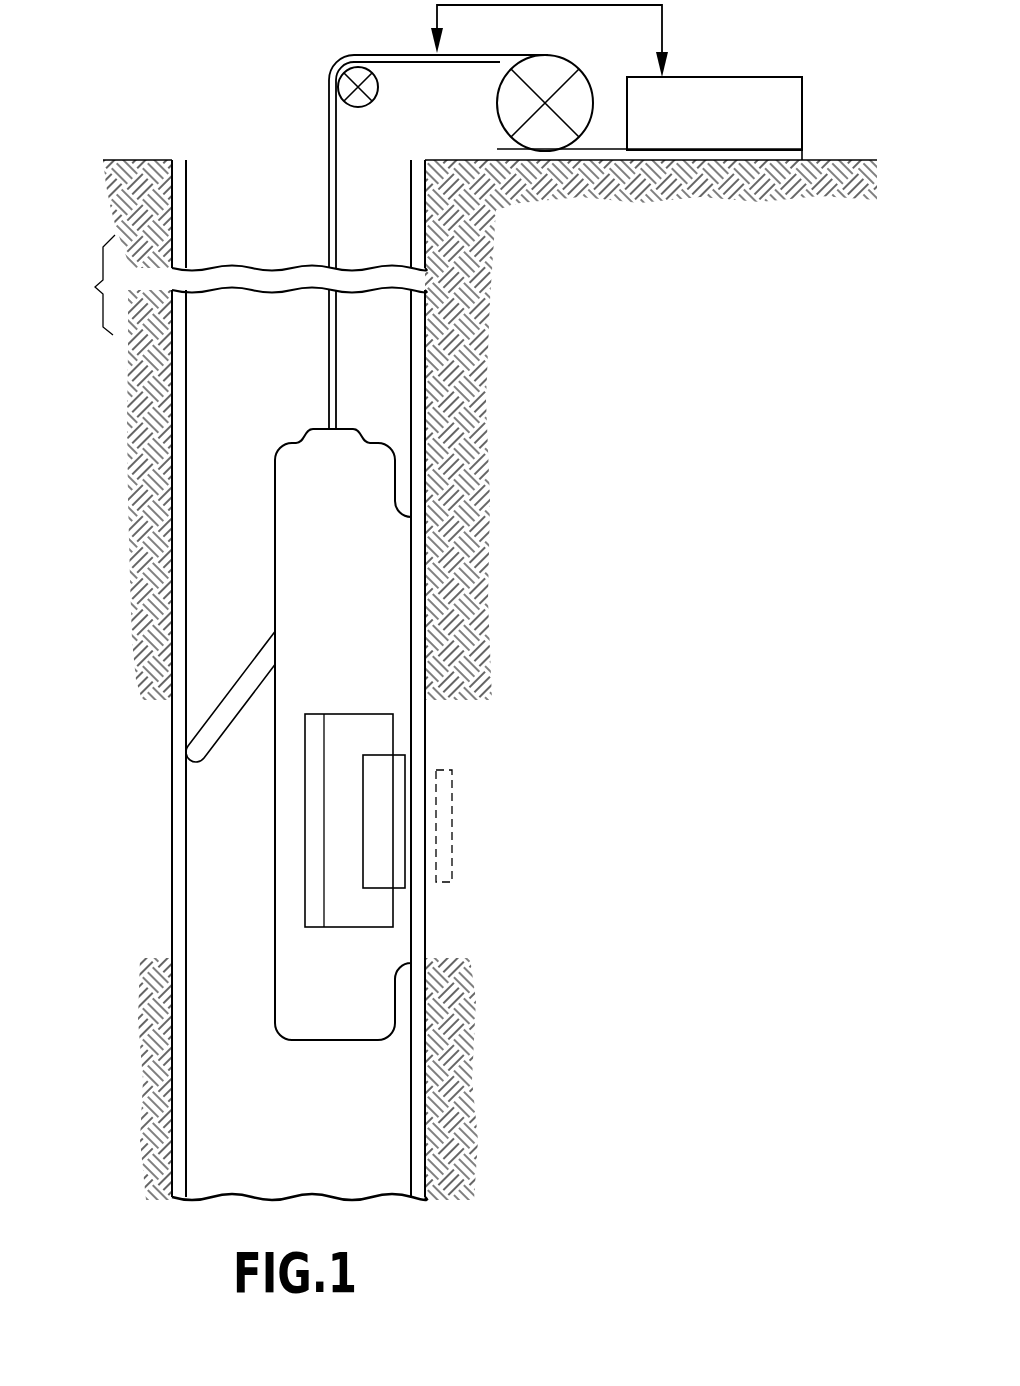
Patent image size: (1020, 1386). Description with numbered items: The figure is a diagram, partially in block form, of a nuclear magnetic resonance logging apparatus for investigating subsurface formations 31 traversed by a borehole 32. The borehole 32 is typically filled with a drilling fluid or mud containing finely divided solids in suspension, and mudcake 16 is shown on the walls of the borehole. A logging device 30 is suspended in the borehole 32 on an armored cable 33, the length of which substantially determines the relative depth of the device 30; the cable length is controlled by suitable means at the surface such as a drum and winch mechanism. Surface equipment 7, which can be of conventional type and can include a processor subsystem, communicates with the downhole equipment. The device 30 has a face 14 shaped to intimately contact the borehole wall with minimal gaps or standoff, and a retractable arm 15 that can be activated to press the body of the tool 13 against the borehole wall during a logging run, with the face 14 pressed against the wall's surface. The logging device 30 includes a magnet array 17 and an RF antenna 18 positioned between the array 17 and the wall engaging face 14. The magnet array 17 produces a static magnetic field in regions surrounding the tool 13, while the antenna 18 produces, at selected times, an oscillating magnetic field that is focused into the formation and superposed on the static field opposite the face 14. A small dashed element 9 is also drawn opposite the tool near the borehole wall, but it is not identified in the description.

The surface equipment 7 is at (723, 77).
The casing collar 9 is at (452, 770).
The tool 13 is at (259, 928).
The face 14 is at (412, 932).
The retractable arm 15 is at (228, 690).
The mudcake 16 is at (178, 397).
The magnet array 17 is at (282, 835).
The RF antenna 18 is at (393, 888).
The logging device 30 is at (363, 734).
The subsurface formations 31 is at (155, 160).
The borehole 32 is at (231, 166).
The armored cable 33 is at (330, 180).